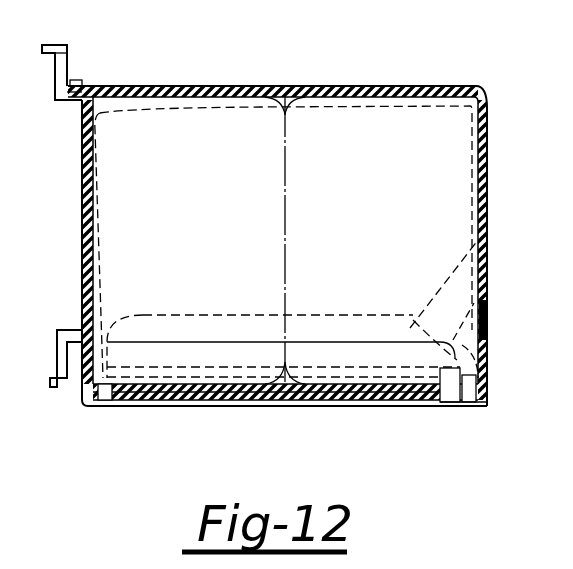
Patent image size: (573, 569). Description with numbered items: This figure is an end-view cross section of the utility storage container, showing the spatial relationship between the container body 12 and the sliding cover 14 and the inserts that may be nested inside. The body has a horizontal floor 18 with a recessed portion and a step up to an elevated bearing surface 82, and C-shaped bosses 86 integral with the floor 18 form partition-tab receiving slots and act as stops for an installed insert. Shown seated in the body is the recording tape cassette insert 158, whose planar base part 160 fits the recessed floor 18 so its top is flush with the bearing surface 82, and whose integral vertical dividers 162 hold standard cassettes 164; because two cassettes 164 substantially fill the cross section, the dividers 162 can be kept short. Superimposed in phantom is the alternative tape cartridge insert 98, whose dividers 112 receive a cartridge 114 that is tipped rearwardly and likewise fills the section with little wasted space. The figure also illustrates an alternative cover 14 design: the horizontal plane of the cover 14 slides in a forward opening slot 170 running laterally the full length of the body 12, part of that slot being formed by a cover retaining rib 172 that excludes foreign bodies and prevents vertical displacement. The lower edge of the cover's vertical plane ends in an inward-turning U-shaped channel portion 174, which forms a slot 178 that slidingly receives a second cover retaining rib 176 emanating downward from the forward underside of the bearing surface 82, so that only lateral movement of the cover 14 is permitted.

The container body 12 is at (82, 194).
The cover 14 is at (492, 108).
The floor 18 is at (255, 403).
The elevated bearing surface 82 is at (487, 330).
The C-shaped boss 86 is at (105, 398).
The recording tape cartridge insert 98 is at (383, 368).
The dividers 112 is at (481, 241).
The cartridge 114 is at (284, 97).
The recording tape cassette insert 158 is at (410, 403).
The base part 160 is at (333, 390).
The dividers 162 is at (481, 303).
The recording tape cassette 164 is at (190, 108).
The forward opening slot 170 is at (90, 86).
The cover retaining rib 172 is at (78, 80).
The U-shaped channel portion 174 is at (485, 404).
The cover retaining rib 176 is at (487, 377).
The slot 178 is at (467, 398).